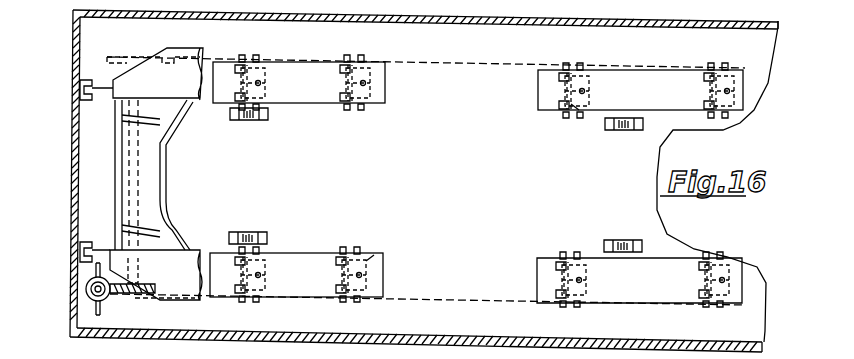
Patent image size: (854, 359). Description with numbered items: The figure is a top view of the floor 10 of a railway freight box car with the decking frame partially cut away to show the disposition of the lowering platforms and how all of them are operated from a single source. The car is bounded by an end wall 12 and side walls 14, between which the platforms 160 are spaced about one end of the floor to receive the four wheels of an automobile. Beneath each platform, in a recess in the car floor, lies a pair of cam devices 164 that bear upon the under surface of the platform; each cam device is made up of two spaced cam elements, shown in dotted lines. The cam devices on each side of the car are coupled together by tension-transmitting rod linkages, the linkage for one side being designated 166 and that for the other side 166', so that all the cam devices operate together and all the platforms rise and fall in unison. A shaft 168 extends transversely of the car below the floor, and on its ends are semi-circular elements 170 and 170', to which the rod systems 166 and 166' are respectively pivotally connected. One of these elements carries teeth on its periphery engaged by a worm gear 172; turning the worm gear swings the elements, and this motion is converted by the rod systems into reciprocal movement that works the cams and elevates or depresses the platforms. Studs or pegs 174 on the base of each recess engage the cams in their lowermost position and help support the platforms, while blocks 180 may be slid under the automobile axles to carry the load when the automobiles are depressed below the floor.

The floor 10 is at (663, 231).
The end wall 12 is at (73, 210).
The side walls 14 is at (437, 20).
The platforms 160 is at (476, 182).
The cam devices 164 is at (365, 95).
The rod linkage 166 is at (427, 289).
The rod linkage 166' is at (426, 81).
The shaft 168 is at (140, 179).
The semi-circular element 170 is at (141, 284).
The semi-circular element 170' is at (141, 62).
The worm gear 172 is at (85, 299).
The studs or pegs 174 is at (583, 112).
The blocks 180 is at (613, 130).